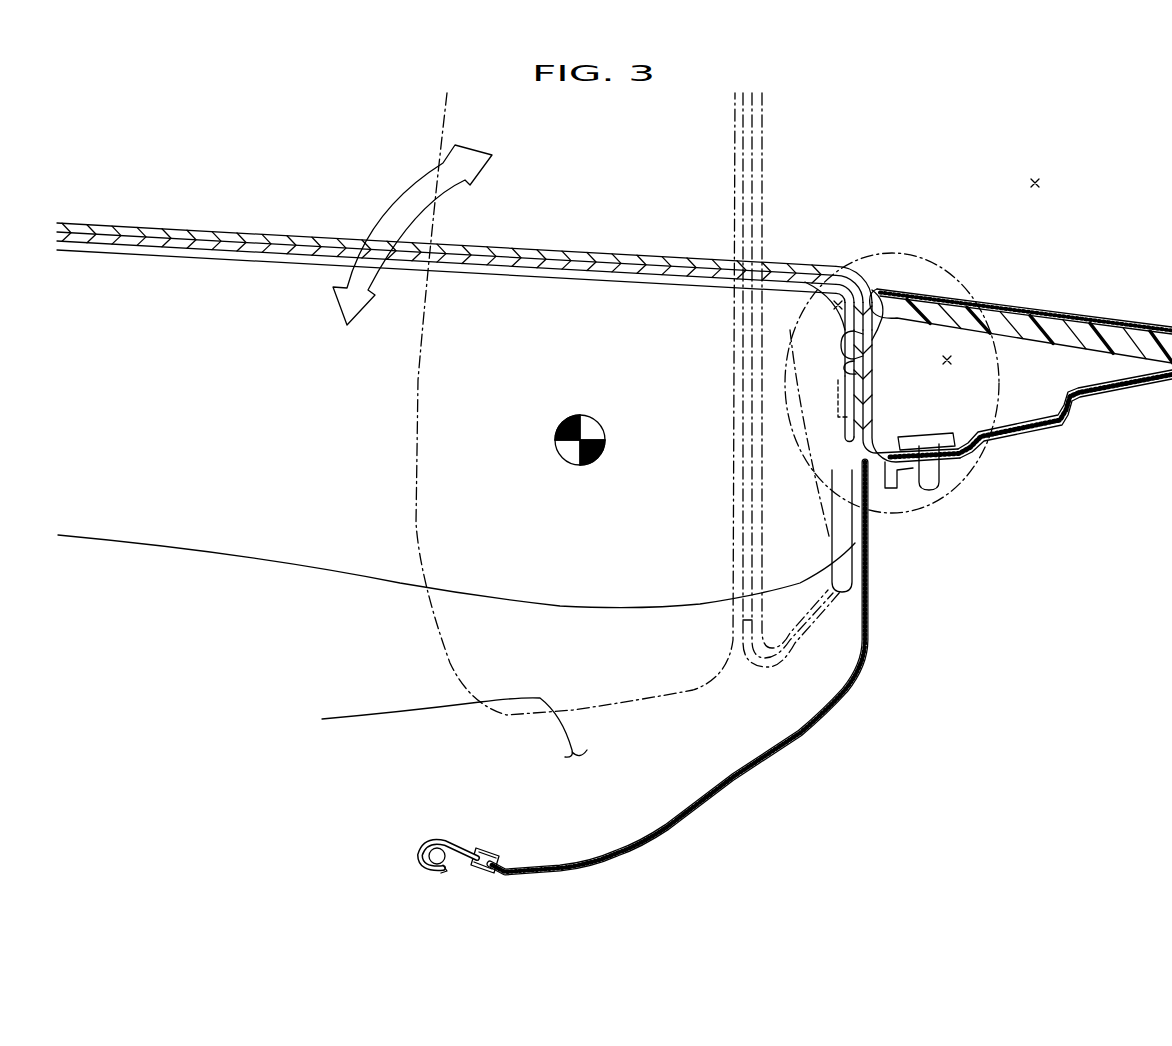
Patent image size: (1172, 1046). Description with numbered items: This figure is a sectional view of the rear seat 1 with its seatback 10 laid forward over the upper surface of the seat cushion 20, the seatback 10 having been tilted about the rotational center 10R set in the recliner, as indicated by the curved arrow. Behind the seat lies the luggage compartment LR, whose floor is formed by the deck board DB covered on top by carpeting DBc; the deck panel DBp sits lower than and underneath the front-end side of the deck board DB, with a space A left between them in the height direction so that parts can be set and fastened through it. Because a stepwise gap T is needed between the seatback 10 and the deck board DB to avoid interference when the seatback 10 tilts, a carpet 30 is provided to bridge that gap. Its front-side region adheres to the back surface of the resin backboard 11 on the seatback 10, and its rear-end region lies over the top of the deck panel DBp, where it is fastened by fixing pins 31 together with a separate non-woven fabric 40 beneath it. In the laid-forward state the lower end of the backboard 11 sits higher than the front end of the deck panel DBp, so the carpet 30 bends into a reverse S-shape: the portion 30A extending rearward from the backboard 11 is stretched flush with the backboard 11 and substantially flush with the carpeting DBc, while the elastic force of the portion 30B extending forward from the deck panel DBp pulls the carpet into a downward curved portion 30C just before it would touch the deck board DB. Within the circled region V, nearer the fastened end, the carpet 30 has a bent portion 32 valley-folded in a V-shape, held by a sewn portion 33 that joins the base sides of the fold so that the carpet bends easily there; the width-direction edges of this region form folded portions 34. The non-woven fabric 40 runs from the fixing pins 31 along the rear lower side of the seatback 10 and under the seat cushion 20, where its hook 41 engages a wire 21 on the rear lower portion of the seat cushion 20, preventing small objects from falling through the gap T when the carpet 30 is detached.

The rear seat 1 is at (229, 147).
The seatback 10 is at (178, 548).
The rotational center 10R is at (556, 443).
The resin backboard 11 is at (92, 228).
The seat cushion 20 is at (360, 717).
The wire 21 is at (434, 846).
The carpet 30 is at (508, 313).
The portion extending from backboard 30A is at (828, 270).
The portion extending from deck panel 30B is at (860, 440).
The curved portion 30C is at (840, 290).
The fixing pins 31 is at (925, 437).
The bent portion 32 is at (862, 335).
The sewn portion 33 is at (868, 352).
The folded portions 34 is at (843, 330).
The non-woven fabric 40 is at (718, 793).
The hook 41 is at (480, 855).
The space A is at (947, 354).
The gap T is at (838, 300).
The region V is at (930, 262).
The luggage compartment LR is at (1037, 178).
The deck board DB is at (1073, 303).
The carpeting DBc is at (1003, 292).
The deck panel DBp is at (1032, 432).